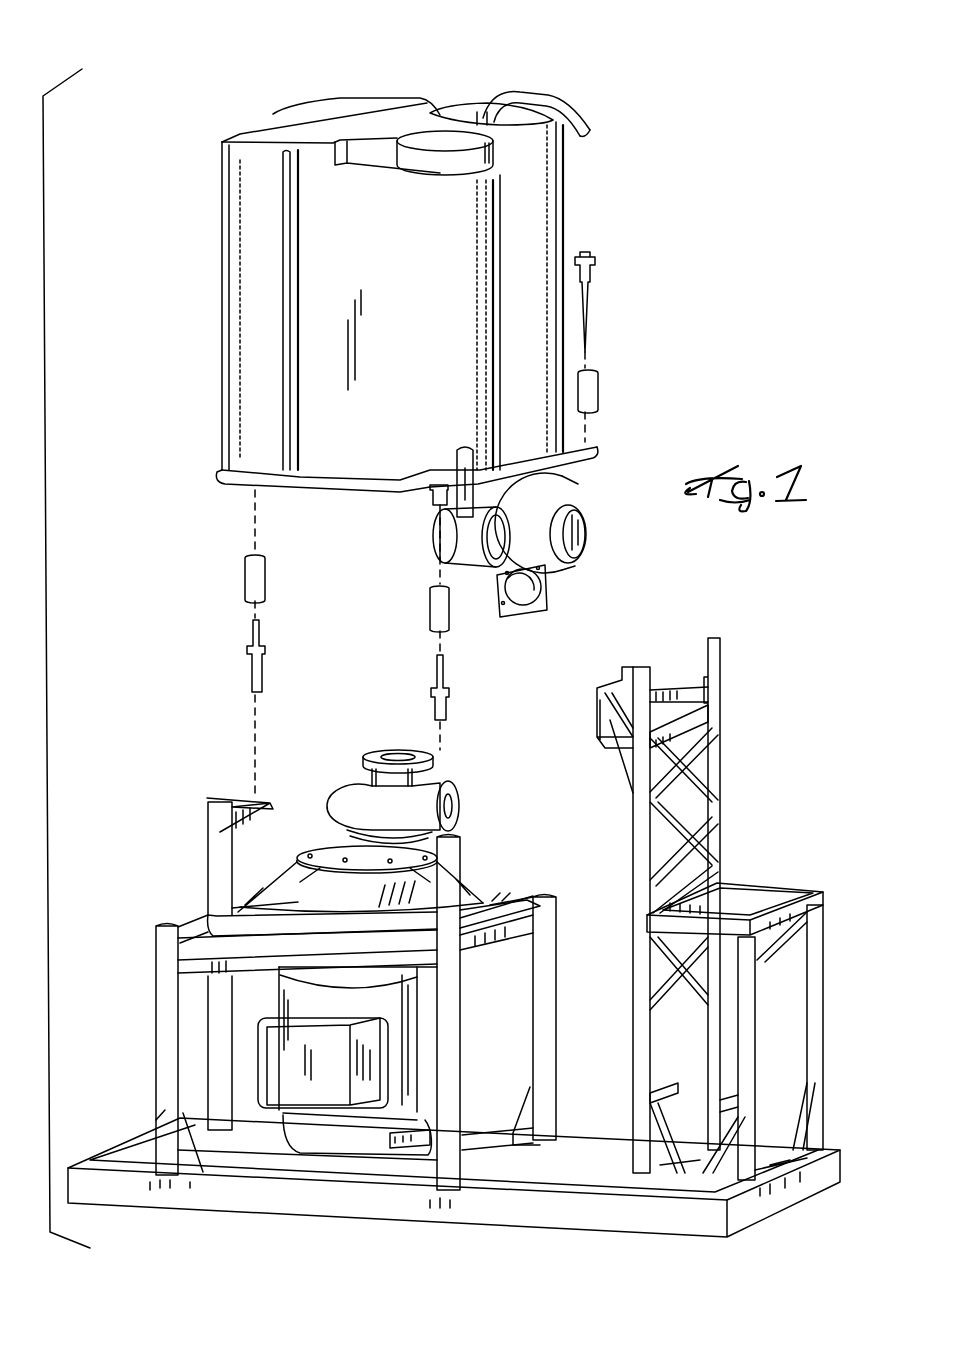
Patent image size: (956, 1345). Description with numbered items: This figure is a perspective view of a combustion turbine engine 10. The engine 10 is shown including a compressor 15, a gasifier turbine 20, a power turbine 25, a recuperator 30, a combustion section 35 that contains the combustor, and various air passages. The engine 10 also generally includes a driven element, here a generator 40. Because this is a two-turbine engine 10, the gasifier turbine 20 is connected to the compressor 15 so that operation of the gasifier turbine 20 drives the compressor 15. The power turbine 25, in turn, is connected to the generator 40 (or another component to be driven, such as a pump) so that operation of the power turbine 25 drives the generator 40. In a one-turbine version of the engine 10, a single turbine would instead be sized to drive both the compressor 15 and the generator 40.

The combustion turbine engine 10 is at (752, 66).
The compressor 15 is at (540, 500).
The gasifier turbine 20 is at (476, 572).
The power turbine 25 is at (415, 800).
The recuperator 30 is at (353, 127).
The combustion section 35 is at (578, 86).
The generator 40 is at (365, 1135).